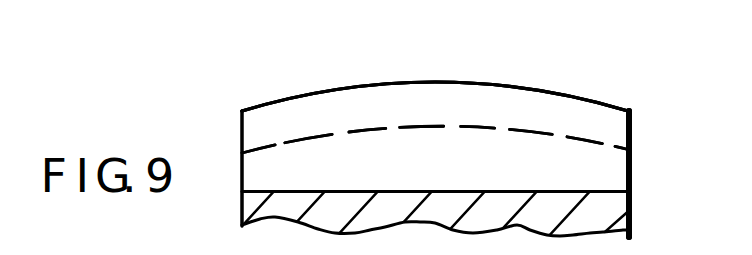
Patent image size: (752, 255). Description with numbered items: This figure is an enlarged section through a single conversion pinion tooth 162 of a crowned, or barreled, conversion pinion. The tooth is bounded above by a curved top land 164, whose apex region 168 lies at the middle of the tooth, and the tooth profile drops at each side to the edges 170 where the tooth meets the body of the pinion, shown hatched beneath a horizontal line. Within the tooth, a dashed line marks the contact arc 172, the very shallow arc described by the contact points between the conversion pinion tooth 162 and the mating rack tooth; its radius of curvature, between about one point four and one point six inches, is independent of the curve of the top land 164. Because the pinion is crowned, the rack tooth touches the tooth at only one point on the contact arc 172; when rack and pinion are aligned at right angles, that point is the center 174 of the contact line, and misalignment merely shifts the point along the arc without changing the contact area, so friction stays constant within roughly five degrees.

The conversion pinion tooth 162 is at (331, 71).
The top land 164 is at (584, 99).
The surface apex region 168 is at (428, 85).
The side edges 170 is at (239, 112).
The contact arc 172 is at (580, 146).
The center of the contact line 174 is at (436, 131).